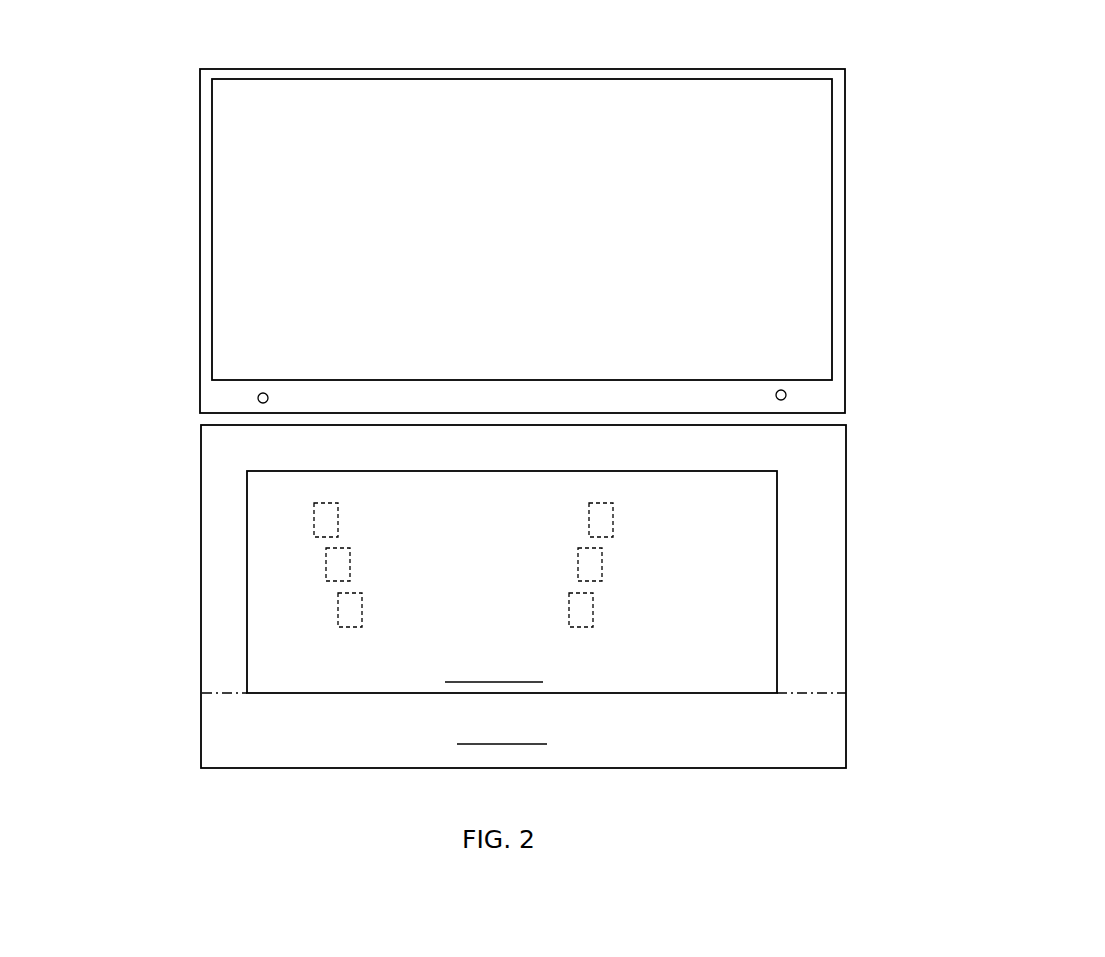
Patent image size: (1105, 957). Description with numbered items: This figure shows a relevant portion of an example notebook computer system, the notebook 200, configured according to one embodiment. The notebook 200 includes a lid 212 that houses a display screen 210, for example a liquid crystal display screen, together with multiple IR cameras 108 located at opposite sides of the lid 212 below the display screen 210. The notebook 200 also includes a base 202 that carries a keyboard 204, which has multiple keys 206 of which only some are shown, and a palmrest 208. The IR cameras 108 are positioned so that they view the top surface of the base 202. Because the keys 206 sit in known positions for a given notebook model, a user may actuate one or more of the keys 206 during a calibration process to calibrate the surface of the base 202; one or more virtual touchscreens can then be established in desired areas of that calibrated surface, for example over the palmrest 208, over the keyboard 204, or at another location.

The notebook 200 is at (1030, 161).
The base 202 is at (847, 525).
The keyboard 204 is at (247, 640).
The keys 206 is at (318, 502).
The palmrest 208 is at (236, 748).
The display screen 210 is at (830, 150).
The lid 212 is at (846, 262).
The IR cameras 108 is at (260, 392).